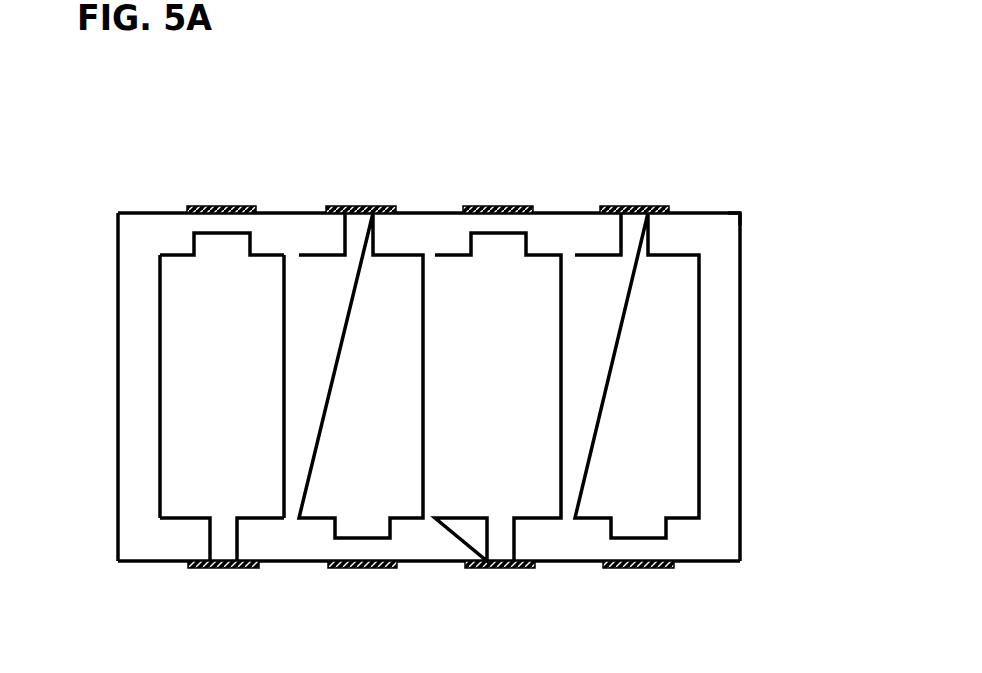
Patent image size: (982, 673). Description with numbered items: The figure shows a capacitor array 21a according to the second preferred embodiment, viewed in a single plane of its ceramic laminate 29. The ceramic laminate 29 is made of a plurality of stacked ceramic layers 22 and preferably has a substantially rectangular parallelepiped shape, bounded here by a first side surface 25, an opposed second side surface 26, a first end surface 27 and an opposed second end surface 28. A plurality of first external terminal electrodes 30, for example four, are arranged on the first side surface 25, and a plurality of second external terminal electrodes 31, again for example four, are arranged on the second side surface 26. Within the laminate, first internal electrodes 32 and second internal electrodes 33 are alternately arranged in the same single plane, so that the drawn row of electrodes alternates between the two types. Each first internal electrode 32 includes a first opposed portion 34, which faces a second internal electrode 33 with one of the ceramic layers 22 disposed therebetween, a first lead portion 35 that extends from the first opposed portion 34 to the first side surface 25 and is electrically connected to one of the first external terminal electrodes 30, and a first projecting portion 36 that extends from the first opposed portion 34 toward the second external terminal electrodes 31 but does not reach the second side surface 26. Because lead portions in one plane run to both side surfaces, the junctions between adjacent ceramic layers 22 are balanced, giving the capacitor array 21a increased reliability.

The capacitor array 21a is at (132, 76).
The ceramic layers 22 is at (437, 366).
The first side surface 25 is at (432, 568).
The second side surface 26 is at (447, 213).
The first end surface 27 is at (118, 344).
The second end surface 28 is at (742, 343).
The ceramic laminate 29 is at (745, 208).
The first external terminal electrodes 30 is at (222, 568).
The second external terminal electrodes 31 is at (353, 207).
The first internal electrodes 32 is at (300, 338).
The second internal electrodes 33 is at (410, 244).
The first opposed portions 34 is at (168, 447).
The first lead portions 35 is at (218, 540).
The first projecting portions 36 is at (200, 243).